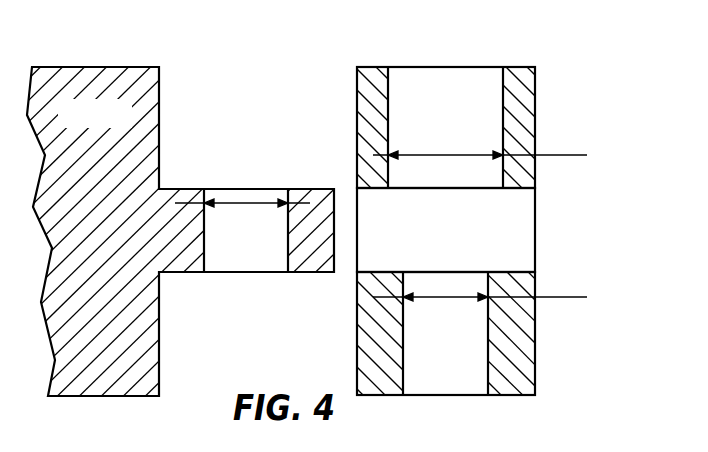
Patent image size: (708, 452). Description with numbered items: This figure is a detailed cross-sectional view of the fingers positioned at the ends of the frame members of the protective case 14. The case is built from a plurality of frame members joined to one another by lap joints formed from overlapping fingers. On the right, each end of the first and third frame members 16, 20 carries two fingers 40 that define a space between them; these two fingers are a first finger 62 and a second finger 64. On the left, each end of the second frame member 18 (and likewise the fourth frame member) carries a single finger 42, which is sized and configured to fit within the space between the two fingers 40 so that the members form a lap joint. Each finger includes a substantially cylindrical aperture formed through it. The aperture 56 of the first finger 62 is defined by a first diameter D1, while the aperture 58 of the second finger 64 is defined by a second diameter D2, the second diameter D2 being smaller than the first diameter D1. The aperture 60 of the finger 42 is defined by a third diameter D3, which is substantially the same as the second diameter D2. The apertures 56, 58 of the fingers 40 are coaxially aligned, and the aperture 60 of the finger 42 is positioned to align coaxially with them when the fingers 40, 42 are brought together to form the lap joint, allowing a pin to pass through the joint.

The protective case 14 is at (353, 230).
The second frame member 18 is at (128, 125).
The first frame member 16 is at (416, 101).
The third frame member 20 is at (375, 78).
The fingers 40 is at (510, 239).
The first finger 62 is at (535, 97).
The second finger 64 is at (535, 343).
The finger 42 is at (302, 274).
The aperture 56 is at (459, 137).
The aperture 58 is at (456, 346).
The aperture 60 is at (262, 243).
The first diameter D1 is at (499, 158).
The second diameter D2 is at (499, 298).
The third diameter D3 is at (310, 203).